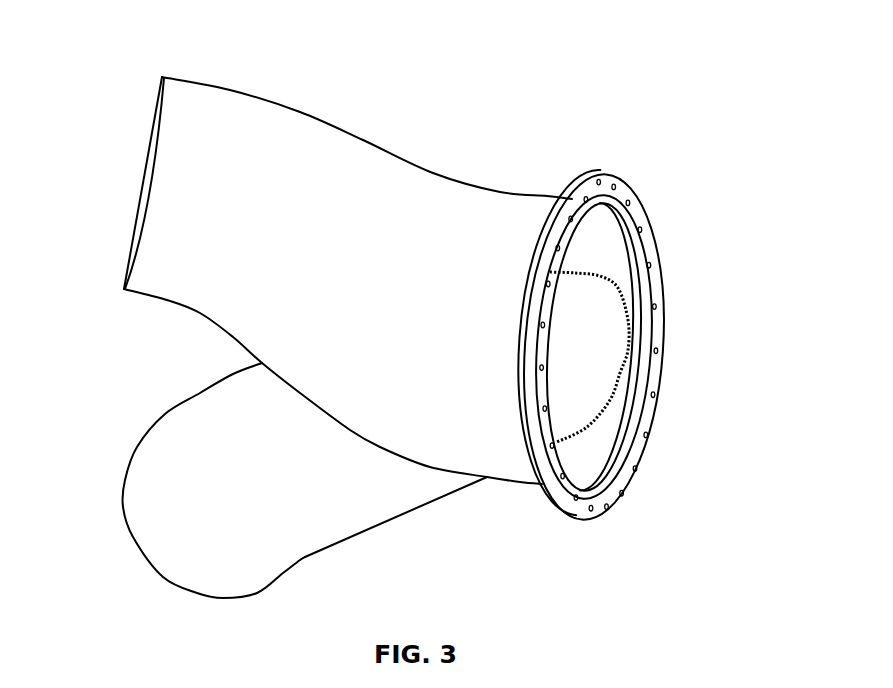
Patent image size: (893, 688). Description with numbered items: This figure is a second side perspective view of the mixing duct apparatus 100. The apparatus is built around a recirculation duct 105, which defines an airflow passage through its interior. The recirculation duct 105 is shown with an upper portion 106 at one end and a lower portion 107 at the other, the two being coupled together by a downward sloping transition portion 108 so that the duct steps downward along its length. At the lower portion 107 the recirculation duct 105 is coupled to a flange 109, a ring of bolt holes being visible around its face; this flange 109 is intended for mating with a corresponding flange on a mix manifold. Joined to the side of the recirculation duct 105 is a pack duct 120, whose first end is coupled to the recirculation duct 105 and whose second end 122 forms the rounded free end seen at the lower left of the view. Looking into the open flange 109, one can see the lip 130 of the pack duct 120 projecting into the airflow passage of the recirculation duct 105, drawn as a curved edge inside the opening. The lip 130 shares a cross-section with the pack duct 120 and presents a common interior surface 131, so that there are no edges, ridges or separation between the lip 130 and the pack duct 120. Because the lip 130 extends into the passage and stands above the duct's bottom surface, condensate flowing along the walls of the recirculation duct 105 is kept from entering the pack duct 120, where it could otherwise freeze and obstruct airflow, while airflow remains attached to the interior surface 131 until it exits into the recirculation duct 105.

The mixing duct apparatus 100 is at (694, 132).
The recirculation duct 105 is at (305, 107).
The upper portion 106 is at (187, 80).
The lower portion 107 is at (536, 195).
The downward sloping transition portion 108 is at (362, 140).
The flange 109 is at (600, 505).
The pack duct 120 is at (307, 557).
The second end 122 is at (165, 578).
The lip 130 is at (622, 292).
The interior surface 131 is at (593, 337).